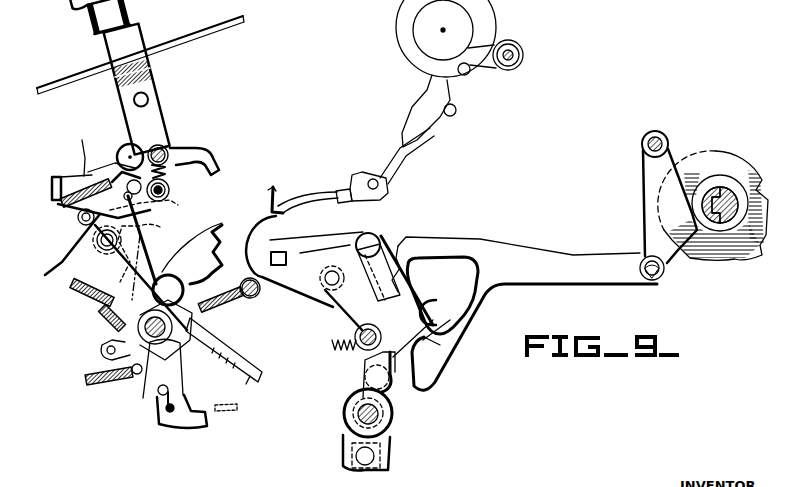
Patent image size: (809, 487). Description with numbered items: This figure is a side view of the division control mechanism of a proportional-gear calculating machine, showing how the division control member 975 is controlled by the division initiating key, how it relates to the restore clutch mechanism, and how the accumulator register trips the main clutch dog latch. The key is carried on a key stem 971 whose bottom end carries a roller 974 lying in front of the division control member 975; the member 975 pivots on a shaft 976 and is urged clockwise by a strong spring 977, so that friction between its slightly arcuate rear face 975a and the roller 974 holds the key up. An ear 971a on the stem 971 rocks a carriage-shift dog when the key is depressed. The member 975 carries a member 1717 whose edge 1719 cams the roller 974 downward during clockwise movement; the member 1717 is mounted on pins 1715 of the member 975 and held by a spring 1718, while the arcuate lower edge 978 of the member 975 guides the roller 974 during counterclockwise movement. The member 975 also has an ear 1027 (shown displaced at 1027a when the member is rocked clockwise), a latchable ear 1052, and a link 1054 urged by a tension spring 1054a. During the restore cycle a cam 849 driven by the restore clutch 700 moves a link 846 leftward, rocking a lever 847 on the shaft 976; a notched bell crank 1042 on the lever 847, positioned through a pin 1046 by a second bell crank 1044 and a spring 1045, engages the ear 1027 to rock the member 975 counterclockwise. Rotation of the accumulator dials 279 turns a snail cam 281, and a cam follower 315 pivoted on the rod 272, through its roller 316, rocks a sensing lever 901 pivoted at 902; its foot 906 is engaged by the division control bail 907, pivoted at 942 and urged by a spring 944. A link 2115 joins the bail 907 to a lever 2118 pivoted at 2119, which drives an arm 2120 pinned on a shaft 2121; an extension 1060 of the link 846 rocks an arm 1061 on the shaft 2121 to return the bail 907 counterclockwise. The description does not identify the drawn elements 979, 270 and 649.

The key stem 971 is at (143, 31).
The ear 971a is at (220, 161).
The division control member 975 is at (82, 140).
The arcuate rear face 975a is at (160, 148).
The roller 979 is at (119, 148).
The spring 1718 is at (88, 172).
The pins 1715 is at (134, 178).
The ear 1052 is at (52, 180).
The cam member 1717 is at (62, 205).
The roller 974 is at (170, 199).
The edge 1719 is at (150, 212).
The link 1054 is at (70, 246).
The arcuate lower edge 978 is at (158, 230).
The link 846 is at (487, 244).
The tension spring 1054a is at (82, 283).
The spring 977 is at (104, 318).
The shaft 976 is at (193, 323).
The spring 1045 is at (228, 301).
The ear 1027 is at (246, 378).
The displaced ear position 1027a is at (240, 408).
The second bell crank 1044 is at (147, 359).
The lever 847 is at (184, 387).
The pin 1046 is at (157, 392).
The notched bell crank 1042 is at (205, 424).
The division control bail 907 is at (322, 200).
The foot 906 is at (344, 204).
The pivot 902 is at (388, 188).
The sensing lever 901 is at (414, 154).
The accumulator dials 279 is at (497, 27).
The cam disc 270 is at (441, 31).
The pivot rod 272 is at (515, 56).
The cam follower 315 is at (490, 77).
The roller 316 is at (466, 76).
The snail cam 281 is at (425, 60).
The pivot 942 is at (348, 291).
The link 2115 is at (405, 273).
The spring 944 is at (333, 340).
The arm 1061 is at (378, 357).
The lever 2118 is at (400, 352).
The extension 1060 is at (427, 386).
The pivot 2119 is at (397, 389).
The shaft 2121 is at (392, 429).
The arm 2120 is at (372, 462).
The restore clutch 700 is at (721, 155).
The shaft 649 is at (706, 190).
The cam 849 is at (724, 262).